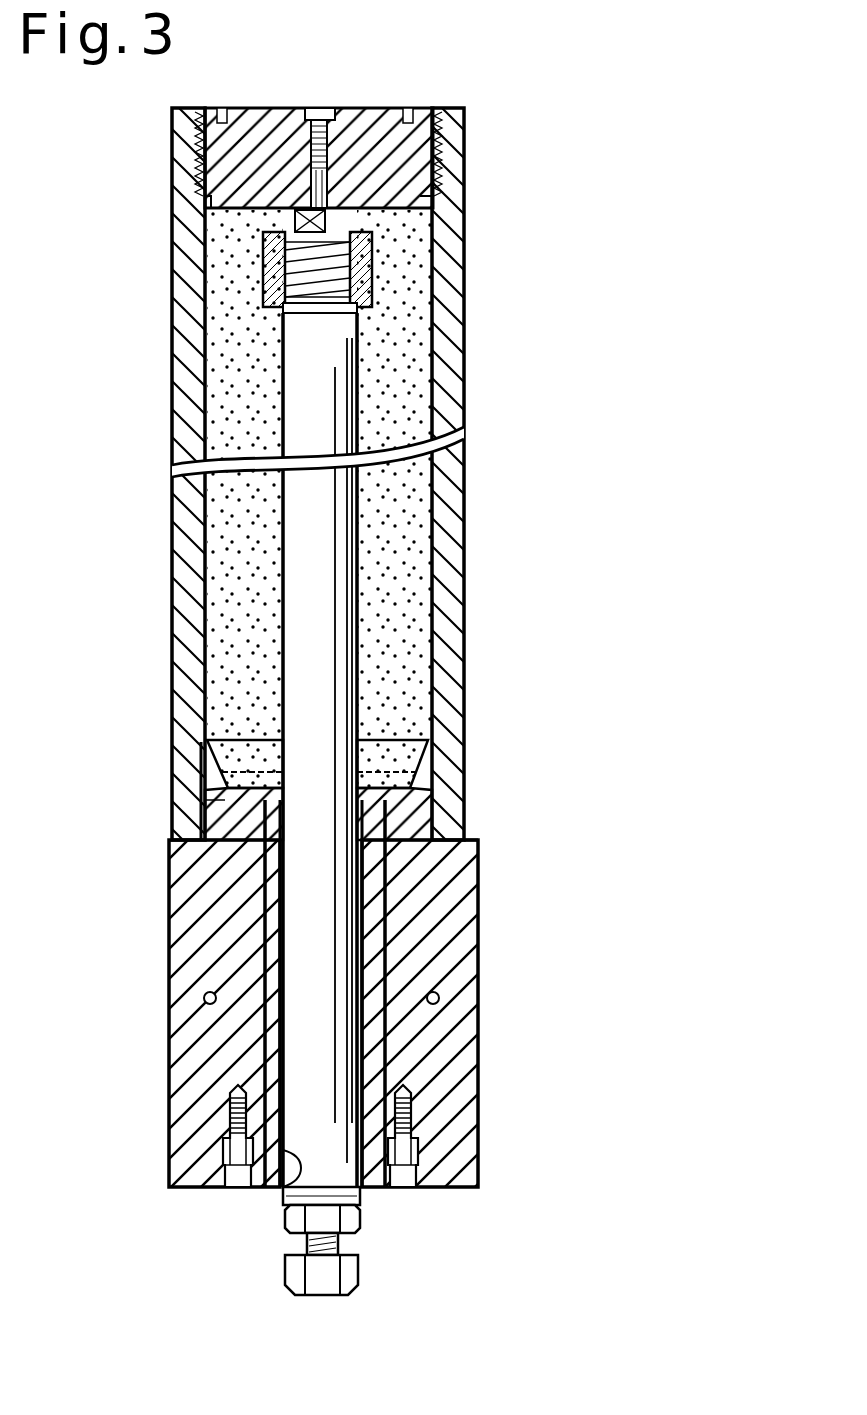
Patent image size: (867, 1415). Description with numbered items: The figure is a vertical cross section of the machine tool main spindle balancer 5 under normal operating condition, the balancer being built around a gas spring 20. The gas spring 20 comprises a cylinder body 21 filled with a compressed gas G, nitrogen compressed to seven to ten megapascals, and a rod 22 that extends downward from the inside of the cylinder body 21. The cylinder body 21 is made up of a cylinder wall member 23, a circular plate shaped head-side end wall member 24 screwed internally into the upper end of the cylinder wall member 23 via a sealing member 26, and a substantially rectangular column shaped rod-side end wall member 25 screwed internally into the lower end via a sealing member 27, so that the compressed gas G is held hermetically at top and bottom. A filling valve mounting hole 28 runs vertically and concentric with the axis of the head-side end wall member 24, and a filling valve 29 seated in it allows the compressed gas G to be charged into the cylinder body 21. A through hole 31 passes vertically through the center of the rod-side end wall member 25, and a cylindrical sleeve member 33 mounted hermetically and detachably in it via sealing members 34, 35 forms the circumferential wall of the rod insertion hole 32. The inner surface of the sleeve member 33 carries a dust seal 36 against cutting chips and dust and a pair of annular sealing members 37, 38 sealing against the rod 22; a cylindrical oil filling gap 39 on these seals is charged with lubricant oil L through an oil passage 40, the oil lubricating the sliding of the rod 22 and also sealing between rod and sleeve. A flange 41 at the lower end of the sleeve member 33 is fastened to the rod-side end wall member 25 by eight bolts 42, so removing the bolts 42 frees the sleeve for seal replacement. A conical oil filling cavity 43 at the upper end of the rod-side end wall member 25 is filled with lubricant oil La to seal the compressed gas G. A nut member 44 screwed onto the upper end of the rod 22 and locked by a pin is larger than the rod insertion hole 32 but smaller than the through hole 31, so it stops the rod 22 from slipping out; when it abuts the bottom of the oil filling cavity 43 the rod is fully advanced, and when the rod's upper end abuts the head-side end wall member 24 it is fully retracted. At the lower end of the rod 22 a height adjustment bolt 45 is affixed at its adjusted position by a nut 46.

The gas sensor 5 is at (497, 221).
The gas spring 20 is at (477, 328).
The cylinder body 21 is at (468, 529).
The rod 22 is at (290, 585).
The cylinder wall member 23 is at (440, 610).
The head-side end wall member 24 is at (248, 126).
The rod-side end wall member 25 is at (458, 1178).
The sealing member 26 is at (420, 208).
The sealing member 27 is at (430, 760).
The filling valve mounting hole 28 is at (330, 190).
The filling valve 29 is at (320, 108).
The through hole 31 is at (262, 893).
The rod insertion hole 32 is at (292, 1197).
The sleeve member 33 is at (387, 962).
The sealing member 34 is at (262, 818).
The sealing member 35 is at (226, 1098).
The dust seal 36 is at (366, 1215).
The annular sealing member 37 is at (365, 822).
The annular sealing member 38 is at (350, 1134).
The oil filling gap 39 is at (383, 873).
The oil passage 40 is at (206, 1006).
The flange 41 is at (372, 1195).
The bolt 42 is at (398, 1190).
The oil filling cavity 43 is at (205, 762).
The nut member 44 is at (268, 272).
The height adjustment bolt 45 is at (318, 1297).
The nut 46 is at (290, 1230).
The compressed gas G is at (403, 412).
The lubricant oil L is at (288, 905).
The lubricant oil La is at (286, 734).